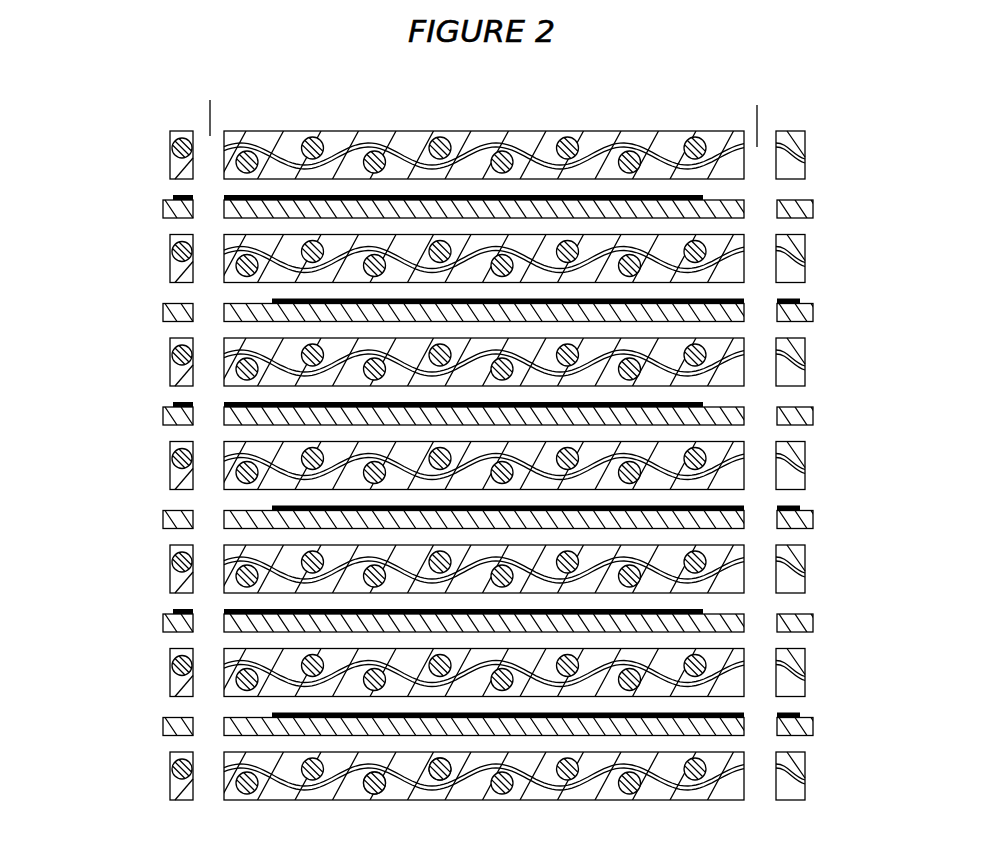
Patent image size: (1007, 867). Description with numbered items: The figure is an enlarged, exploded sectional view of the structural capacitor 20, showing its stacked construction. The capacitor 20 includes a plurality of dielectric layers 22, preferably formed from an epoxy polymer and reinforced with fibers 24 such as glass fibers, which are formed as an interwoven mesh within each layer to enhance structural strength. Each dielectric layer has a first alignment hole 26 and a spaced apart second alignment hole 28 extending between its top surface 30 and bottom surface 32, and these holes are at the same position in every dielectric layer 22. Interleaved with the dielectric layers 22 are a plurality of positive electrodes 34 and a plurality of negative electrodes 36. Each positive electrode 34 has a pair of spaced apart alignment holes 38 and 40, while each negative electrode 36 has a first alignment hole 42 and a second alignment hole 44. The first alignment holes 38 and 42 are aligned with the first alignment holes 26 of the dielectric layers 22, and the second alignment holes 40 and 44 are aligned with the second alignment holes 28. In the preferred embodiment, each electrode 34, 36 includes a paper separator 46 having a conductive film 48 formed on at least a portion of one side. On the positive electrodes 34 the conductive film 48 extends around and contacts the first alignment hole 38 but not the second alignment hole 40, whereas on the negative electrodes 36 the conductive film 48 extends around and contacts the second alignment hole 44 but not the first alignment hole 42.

The capacitor 20 is at (870, 391).
The dielectric layers 22 is at (163, 687).
The fibers 24 is at (373, 790).
The first alignment hole 26 is at (210, 100).
The second alignment hole 28 is at (757, 105).
The top surface 30 is at (658, 128).
The bottom surface 32 is at (712, 180).
The positive electrodes 34 is at (157, 209).
The negative electrodes 36 is at (157, 313).
The first alignment hole of positive electrode 38 is at (208, 622).
The second alignment hole of positive electrode 40 is at (760, 623).
The first alignment hole of negative electrode 42 is at (213, 520).
The second alignment hole of negative electrode 44 is at (760, 518).
The paper separator 46 is at (715, 620).
The conductive film 48 is at (707, 505).